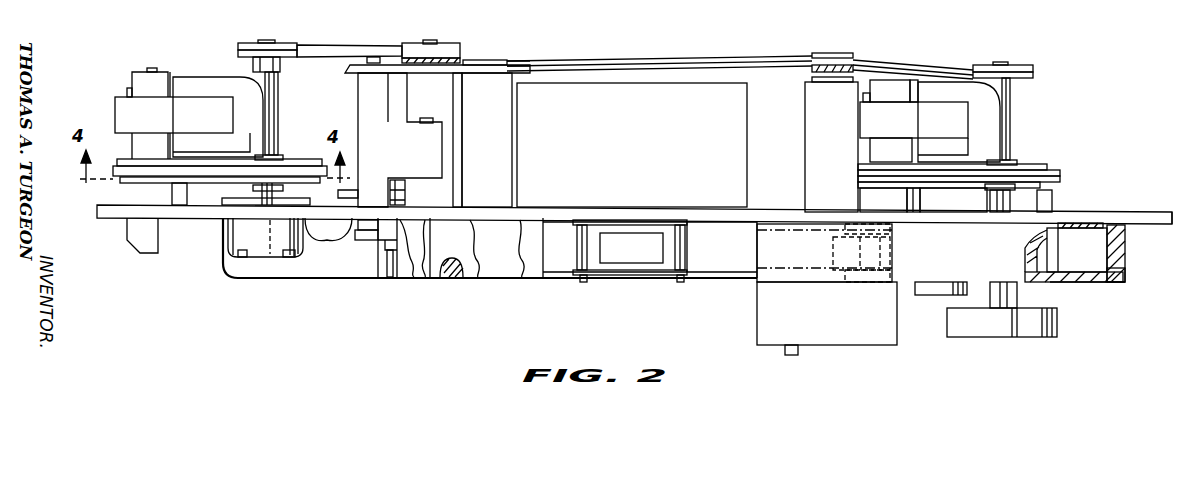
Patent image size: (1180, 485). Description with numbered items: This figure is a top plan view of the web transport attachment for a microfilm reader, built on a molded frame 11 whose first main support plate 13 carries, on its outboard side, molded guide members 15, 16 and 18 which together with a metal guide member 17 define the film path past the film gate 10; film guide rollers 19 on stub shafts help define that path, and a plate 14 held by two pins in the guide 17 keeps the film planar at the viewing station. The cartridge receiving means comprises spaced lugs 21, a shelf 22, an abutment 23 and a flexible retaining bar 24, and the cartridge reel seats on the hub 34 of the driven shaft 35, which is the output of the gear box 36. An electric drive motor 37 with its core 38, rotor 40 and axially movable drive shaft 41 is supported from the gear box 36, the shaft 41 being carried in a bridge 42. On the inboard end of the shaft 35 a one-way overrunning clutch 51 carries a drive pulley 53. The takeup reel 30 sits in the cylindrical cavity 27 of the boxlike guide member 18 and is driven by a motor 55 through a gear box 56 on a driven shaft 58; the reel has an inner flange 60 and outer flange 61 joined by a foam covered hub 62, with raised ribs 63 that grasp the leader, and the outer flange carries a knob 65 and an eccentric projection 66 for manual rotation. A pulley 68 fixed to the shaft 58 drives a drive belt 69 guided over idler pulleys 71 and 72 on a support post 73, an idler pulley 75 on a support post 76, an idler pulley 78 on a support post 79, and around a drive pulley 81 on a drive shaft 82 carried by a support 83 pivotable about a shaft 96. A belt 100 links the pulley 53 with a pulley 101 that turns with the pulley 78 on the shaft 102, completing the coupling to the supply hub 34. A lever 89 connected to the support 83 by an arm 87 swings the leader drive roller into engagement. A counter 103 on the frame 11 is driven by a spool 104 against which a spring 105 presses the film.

The film gate 10 is at (648, 258).
The molded frame 11 is at (1140, 208).
The first main support plate 13 is at (1171, 212).
The plate 14 is at (620, 268).
The guide member 15 is at (391, 278).
The guide member 16 is at (442, 262).
The metal guide member 17 is at (713, 278).
The boxlike guide member 18 is at (1127, 259).
The film guide rollers 19 is at (420, 264).
The spaced lugs 21 is at (397, 274).
The shelf 22 is at (273, 279).
The abutment 23 is at (147, 245).
The flexible retaining bar 24 is at (327, 241).
The cylindrical cavity 27 is at (1113, 268).
The takeup reel 30 is at (1083, 292).
The hub 34 is at (233, 242).
The driven shaft 35 is at (278, 127).
The gear box 36 is at (115, 179).
The electric drive motor 37 is at (133, 64).
The core 38 is at (205, 105).
The rotor 40 is at (127, 88).
The drive shaft 41 is at (152, 70).
The bridge 42 is at (163, 80).
The one-way overrunning clutch 51 is at (280, 63).
The drive pulley 53 is at (288, 43).
The motor 55 is at (917, 83).
The gear box 56 is at (1047, 163).
The driven shaft 58 is at (1008, 110).
The inner flange 60 is at (1083, 223).
The outer flange 61 is at (1098, 284).
The hub 62 is at (1037, 260).
The raised ribs 63 is at (1058, 268).
The knob 65 is at (977, 334).
The projection 66 is at (930, 296).
The pulley 68 is at (1025, 65).
The drive belt 69 is at (742, 62).
The idler pulley 71 is at (832, 53).
The idler pulley 72 is at (855, 68).
The support post 73 is at (845, 158).
The idler pulley 75 is at (507, 62).
The support post 76 is at (495, 157).
The idler pulley 78 is at (462, 62).
The support post 79 is at (448, 100).
The drive pulley 81 is at (350, 74).
The drive shaft 82 is at (375, 57).
The support 83 is at (418, 158).
The arm 87 is at (350, 193).
The lever 89 is at (225, 199).
The shaft 96 is at (427, 118).
The belt 100 is at (333, 46).
The pulley 101 is at (452, 44).
The shaft 102 is at (430, 40).
The counter 103 is at (845, 340).
The spool 104 is at (883, 247).
The spring 105 is at (800, 268).